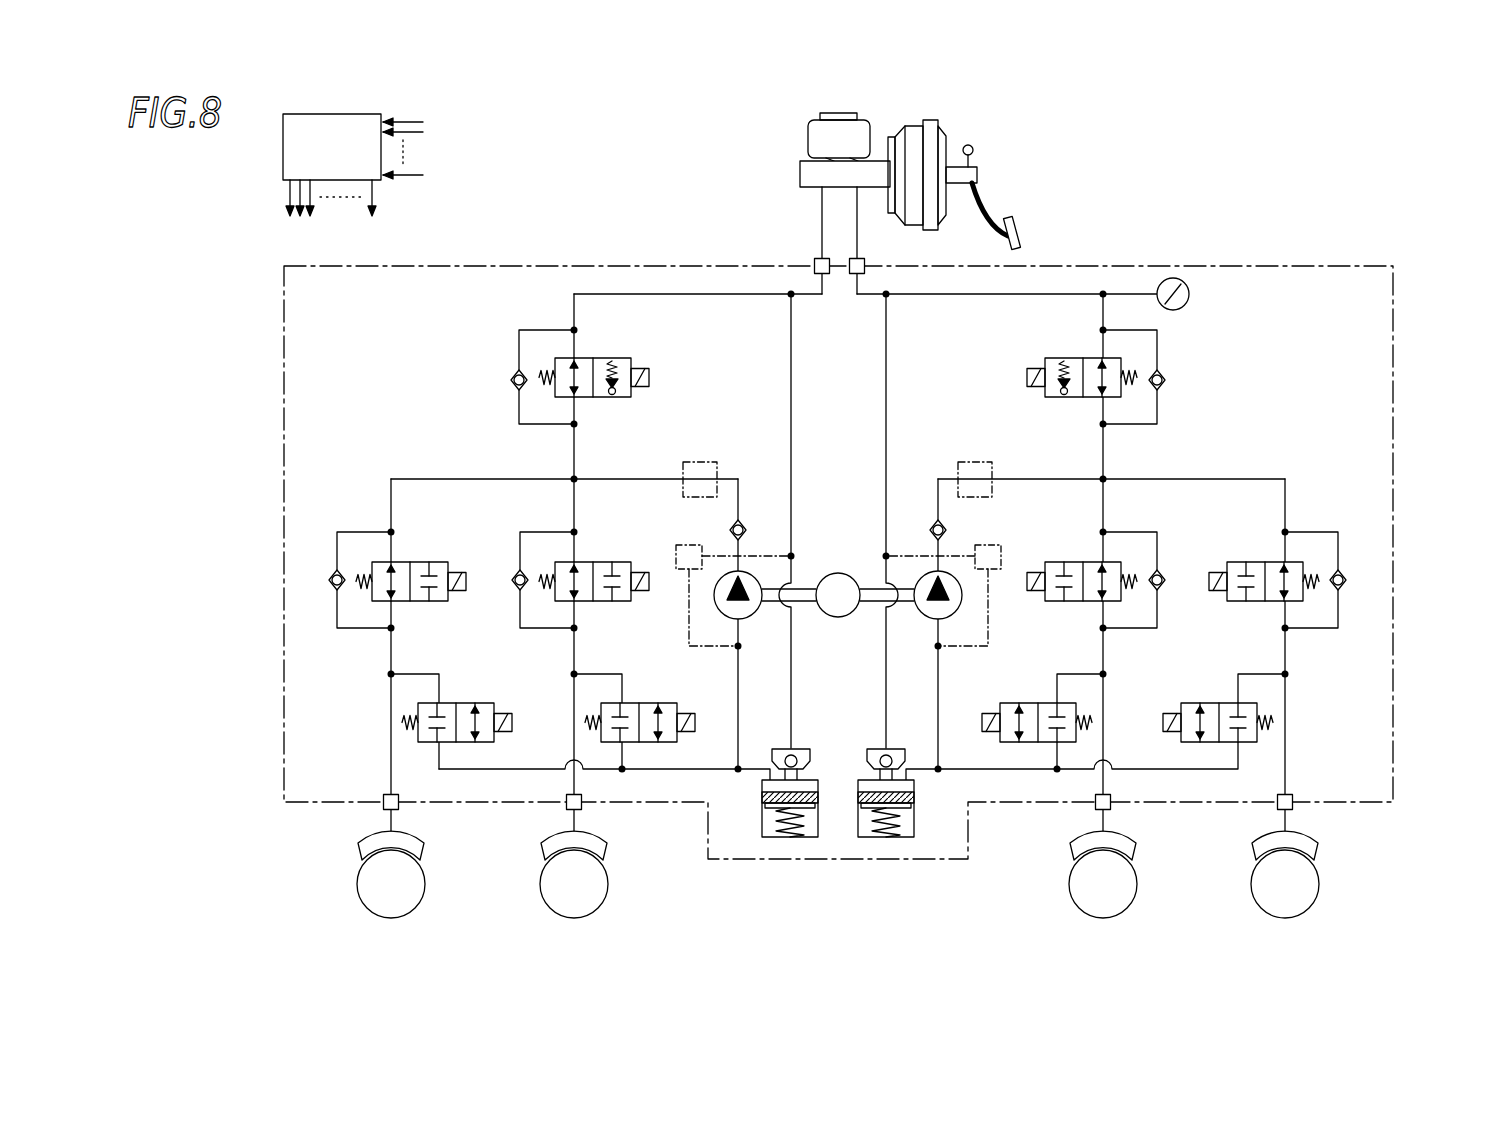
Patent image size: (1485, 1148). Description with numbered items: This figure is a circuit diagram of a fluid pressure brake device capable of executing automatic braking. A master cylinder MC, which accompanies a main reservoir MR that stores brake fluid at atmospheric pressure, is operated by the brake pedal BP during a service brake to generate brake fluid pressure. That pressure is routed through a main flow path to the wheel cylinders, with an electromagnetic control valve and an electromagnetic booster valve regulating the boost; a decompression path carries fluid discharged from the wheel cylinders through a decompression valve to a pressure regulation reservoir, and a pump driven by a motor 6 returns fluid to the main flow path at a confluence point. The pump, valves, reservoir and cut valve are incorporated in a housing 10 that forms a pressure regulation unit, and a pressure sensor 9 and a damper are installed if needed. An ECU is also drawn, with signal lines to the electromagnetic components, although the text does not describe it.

The motor 6 is at (838, 573).
The pressure sensor 9 is at (1190, 297).
The housing 10 is at (1330, 268).
The main reservoir MR is at (815, 135).
The master cylinder MC is at (810, 175).
The brake pedal BP is at (1020, 237).
The electronic control unit ECU is at (353, 165).